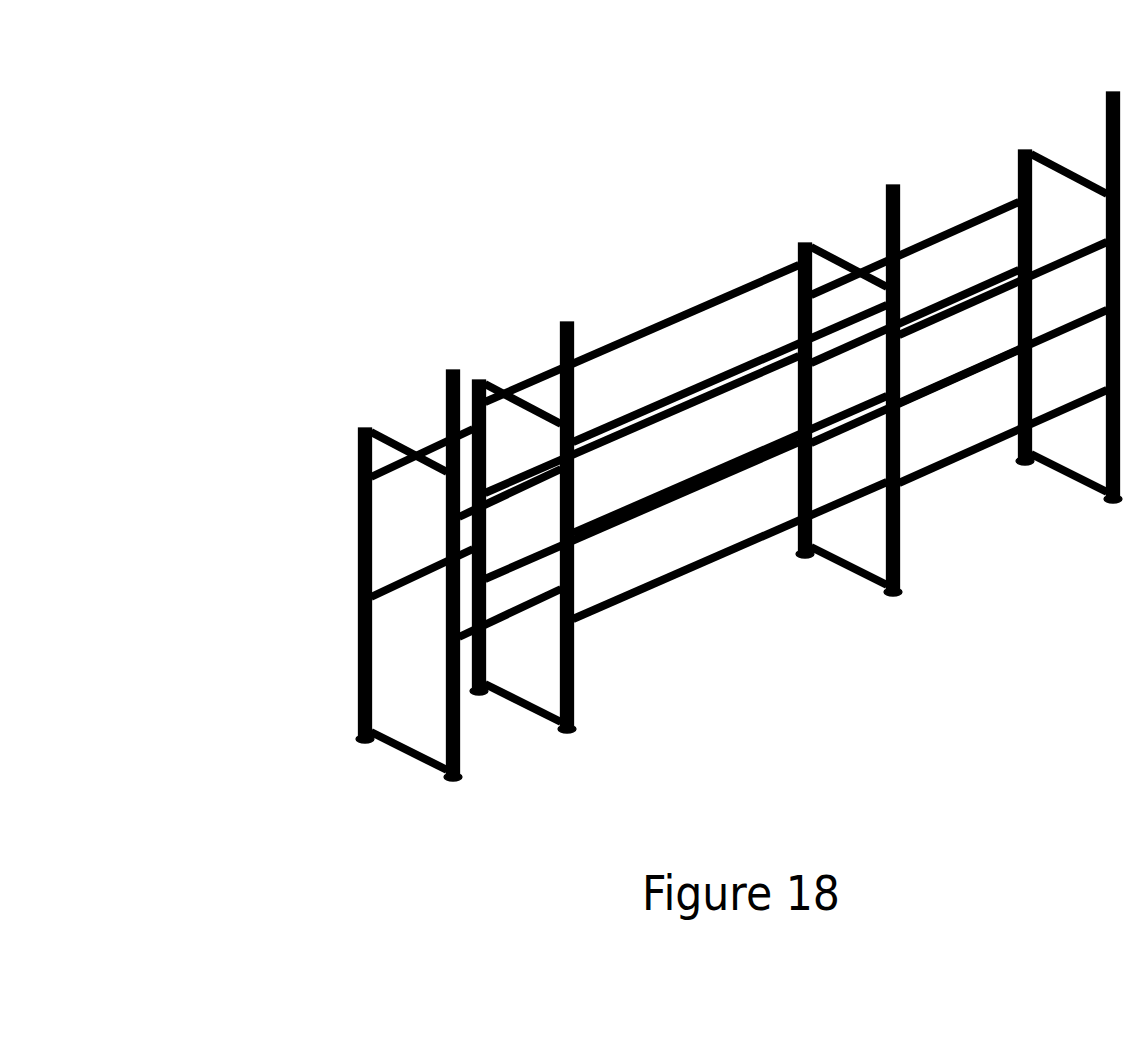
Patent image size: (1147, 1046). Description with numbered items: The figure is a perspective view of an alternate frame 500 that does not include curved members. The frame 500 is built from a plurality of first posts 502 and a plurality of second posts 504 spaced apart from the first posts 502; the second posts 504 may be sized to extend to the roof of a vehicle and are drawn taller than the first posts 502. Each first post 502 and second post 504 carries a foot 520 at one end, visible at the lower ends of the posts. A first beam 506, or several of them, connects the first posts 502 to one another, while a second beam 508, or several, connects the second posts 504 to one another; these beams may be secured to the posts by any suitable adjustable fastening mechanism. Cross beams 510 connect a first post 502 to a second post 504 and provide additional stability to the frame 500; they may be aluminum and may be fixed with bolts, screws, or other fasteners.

The frame 500 is at (661, 474).
The first posts 502 is at (360, 540).
The second posts 504 is at (462, 738).
The first beam 506 is at (650, 327).
The second beam 508 is at (707, 565).
The cross beams 510 is at (830, 247).
The foot 520 is at (572, 734).